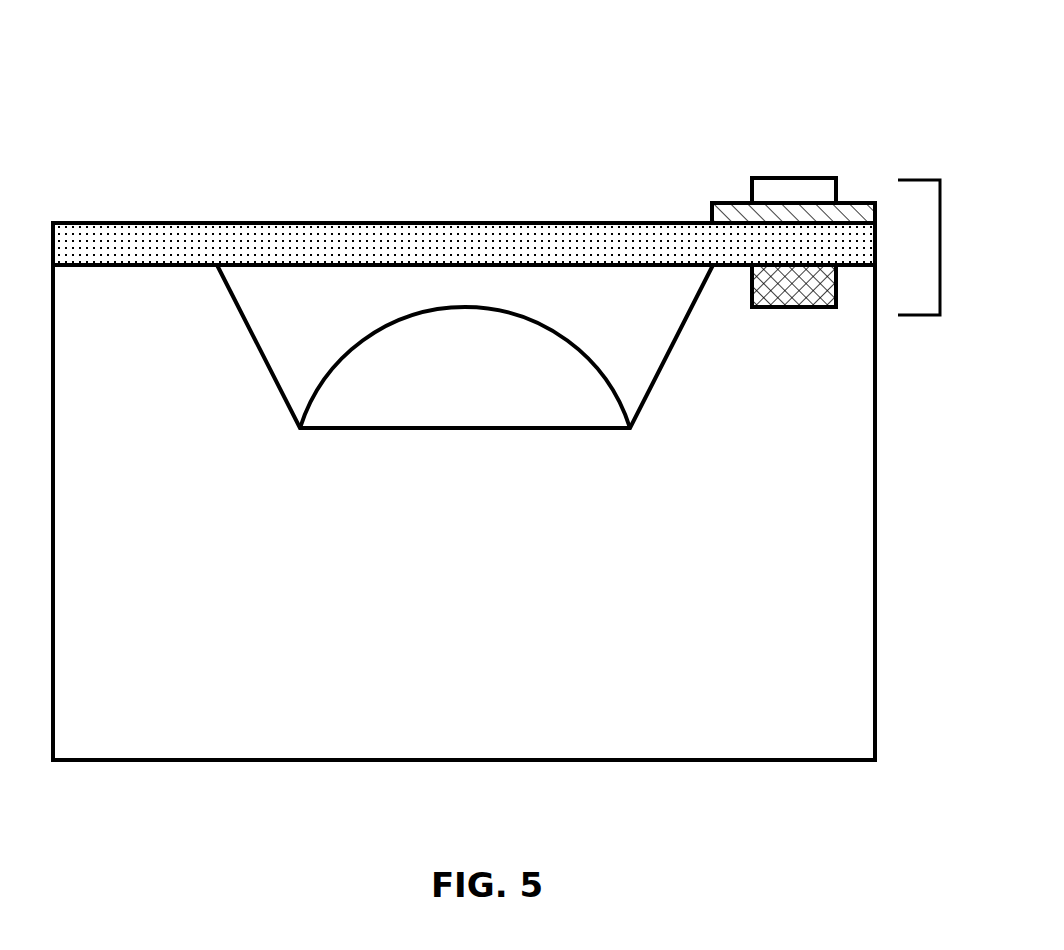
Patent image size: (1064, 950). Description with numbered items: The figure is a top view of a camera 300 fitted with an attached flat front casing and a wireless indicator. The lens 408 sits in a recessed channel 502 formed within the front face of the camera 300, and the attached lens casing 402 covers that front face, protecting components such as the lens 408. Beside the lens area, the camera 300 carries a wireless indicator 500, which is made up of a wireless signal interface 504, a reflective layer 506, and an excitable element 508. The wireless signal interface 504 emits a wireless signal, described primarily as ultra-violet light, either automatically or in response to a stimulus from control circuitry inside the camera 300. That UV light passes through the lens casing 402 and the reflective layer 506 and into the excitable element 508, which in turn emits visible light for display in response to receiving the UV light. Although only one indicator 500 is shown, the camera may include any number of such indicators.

The camera 300 is at (130, 68).
The lens casing 402 is at (378, 245).
The recessed channel 502 is at (296, 318).
The lens 408 is at (436, 404).
The reflective layer 506 is at (704, 205).
The excitable element 508 is at (801, 172).
The wireless signal interface 504 is at (787, 314).
The wireless indicator 500 is at (940, 248).